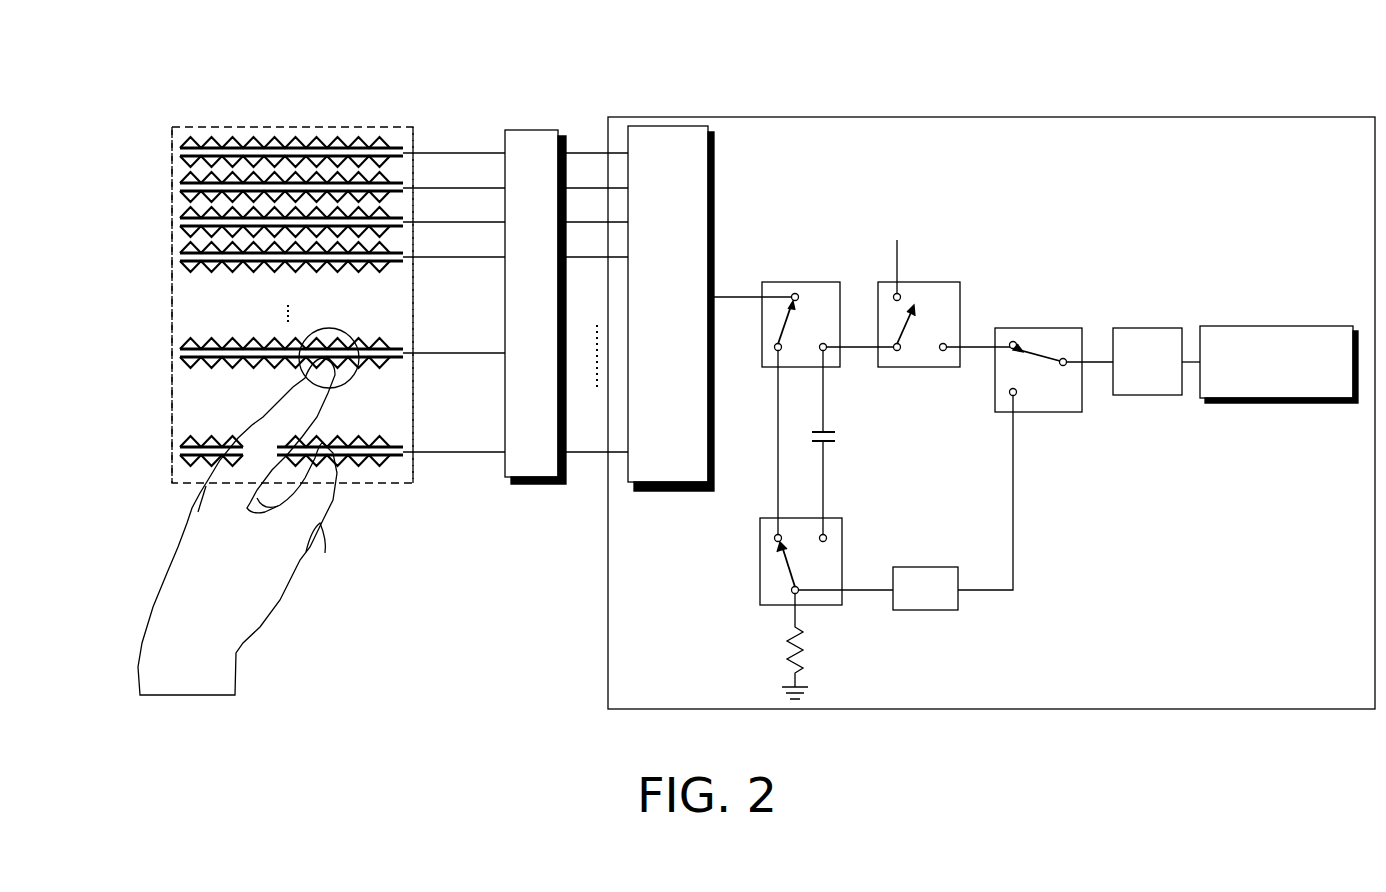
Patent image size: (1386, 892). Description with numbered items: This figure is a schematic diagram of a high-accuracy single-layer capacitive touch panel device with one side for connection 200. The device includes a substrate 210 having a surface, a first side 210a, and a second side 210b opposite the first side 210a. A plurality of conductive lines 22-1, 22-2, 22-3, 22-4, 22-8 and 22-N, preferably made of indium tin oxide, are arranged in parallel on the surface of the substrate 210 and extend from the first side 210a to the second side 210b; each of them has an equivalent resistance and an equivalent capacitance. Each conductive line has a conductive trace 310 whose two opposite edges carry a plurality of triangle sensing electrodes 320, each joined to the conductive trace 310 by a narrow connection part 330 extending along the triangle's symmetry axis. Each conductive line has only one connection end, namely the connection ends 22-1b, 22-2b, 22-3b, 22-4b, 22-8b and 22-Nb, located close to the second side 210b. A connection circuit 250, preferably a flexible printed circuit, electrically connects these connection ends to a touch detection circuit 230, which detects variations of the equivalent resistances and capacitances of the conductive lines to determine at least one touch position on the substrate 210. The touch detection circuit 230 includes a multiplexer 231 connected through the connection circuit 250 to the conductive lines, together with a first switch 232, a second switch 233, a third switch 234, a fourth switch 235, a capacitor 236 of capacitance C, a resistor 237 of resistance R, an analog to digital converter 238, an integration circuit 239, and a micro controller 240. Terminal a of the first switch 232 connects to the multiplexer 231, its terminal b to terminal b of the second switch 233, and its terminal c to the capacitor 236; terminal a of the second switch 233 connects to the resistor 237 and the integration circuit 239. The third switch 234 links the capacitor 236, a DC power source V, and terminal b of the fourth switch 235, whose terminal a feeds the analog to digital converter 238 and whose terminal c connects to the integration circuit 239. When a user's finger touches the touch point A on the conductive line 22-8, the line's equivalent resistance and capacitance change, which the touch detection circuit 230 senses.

The high-accuracy single-layer capacitive touch panel device with one side for conne 200 is at (522, 681).
The substrate 210 is at (283, 125).
The first side 210a is at (187, 125).
The second side 210b is at (405, 125).
The conductive line 22-1 is at (178, 151).
The conductive line 22-2 is at (178, 186).
The conductive line 22-3 is at (178, 221).
The conductive line 22-4 is at (178, 256).
The conductive line 22-8 is at (178, 352).
The conductive line 22-N is at (178, 450).
The connection end 22-1b is at (405, 151).
The connection end 22-2b is at (405, 186).
The connection end 22-3b is at (405, 220).
The connection end 22-4b is at (405, 255).
The connection end 22-8b is at (405, 351).
The connection end 22-Nb is at (405, 450).
The touch point A is at (347, 373).
The conductive trace 310 is at (403, 449).
The triangle sensing electrode 320 is at (368, 478).
The connection part 330 is at (397, 463).
The connection circuit 250 is at (530, 130).
The touch detection circuit 230 is at (1172, 117).
The multiplexer 231 is at (672, 126).
The first switch 232 is at (802, 282).
The second switch 233 is at (760, 570).
The third switch 234 is at (950, 282).
The fourth switch 235 is at (1040, 328).
The capacitor 236 is at (840, 437).
The resistor 237 is at (763, 646).
The analog to digital converter 238 is at (1147, 328).
The integration circuit 239 is at (925, 567).
The micro controller 240 is at (1277, 326).